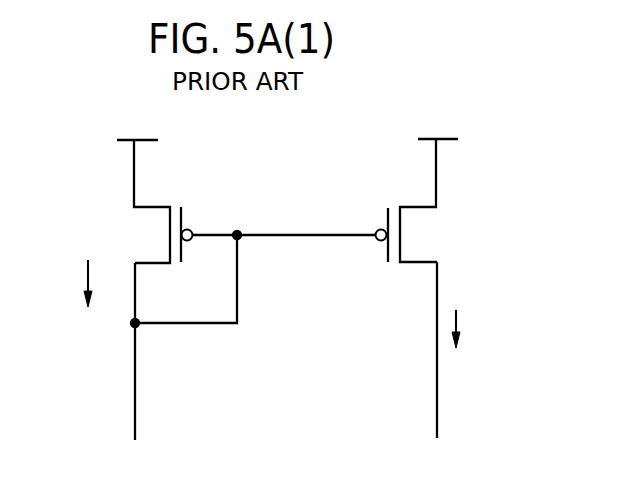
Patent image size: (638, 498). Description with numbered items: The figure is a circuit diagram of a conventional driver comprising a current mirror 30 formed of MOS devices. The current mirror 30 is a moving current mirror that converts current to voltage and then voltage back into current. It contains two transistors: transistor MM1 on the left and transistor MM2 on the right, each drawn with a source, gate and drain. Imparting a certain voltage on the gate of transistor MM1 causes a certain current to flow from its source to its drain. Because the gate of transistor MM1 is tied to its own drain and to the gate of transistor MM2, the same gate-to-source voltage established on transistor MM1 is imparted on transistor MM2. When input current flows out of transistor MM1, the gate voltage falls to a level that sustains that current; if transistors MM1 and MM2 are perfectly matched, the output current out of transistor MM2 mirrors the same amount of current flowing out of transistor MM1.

The current mirror 30 is at (512, 167).
The transistor MM1 is at (189, 221).
The transistor MM2 is at (378, 219).